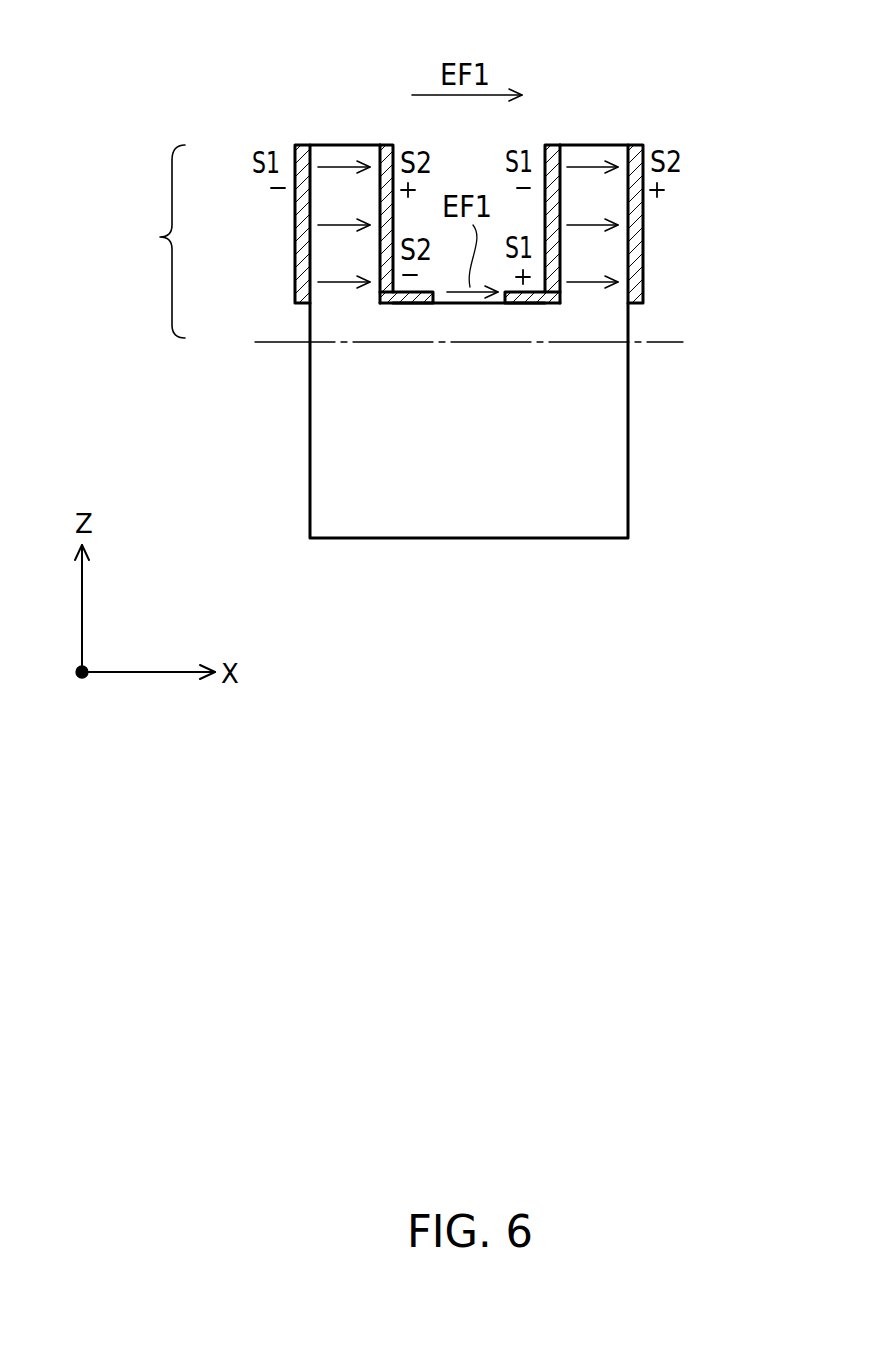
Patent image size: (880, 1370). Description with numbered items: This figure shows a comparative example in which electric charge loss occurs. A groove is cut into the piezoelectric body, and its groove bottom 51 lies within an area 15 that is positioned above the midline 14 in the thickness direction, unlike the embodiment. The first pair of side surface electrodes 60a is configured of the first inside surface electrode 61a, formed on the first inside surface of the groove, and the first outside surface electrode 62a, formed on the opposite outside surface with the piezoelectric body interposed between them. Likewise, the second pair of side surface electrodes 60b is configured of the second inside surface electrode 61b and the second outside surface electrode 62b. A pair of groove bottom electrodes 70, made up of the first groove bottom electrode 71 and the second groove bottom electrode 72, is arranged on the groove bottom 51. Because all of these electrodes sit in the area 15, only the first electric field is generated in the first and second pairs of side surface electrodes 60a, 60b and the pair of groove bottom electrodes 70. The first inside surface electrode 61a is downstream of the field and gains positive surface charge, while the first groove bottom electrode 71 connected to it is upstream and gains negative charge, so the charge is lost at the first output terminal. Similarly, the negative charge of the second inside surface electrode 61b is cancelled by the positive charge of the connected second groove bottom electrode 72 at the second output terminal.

The midline 14 is at (667, 342).
The area 15 is at (154, 241).
The groove bottom 51 is at (470, 305).
The first pair of side surface electrodes 60a is at (313, 221).
The second pair of side surface electrodes 60b is at (623, 221).
The first inside surface electrode 61a is at (393, 146).
The second inside surface electrode 61b is at (545, 146).
The first outside surface electrode 62a is at (295, 254).
The second outside surface electrode 62b is at (643, 243).
The pair of groove bottom electrodes 70 is at (528, 305).
The first groove bottom electrode 71 is at (380, 305).
The second groove bottom electrode 72 is at (555, 305).